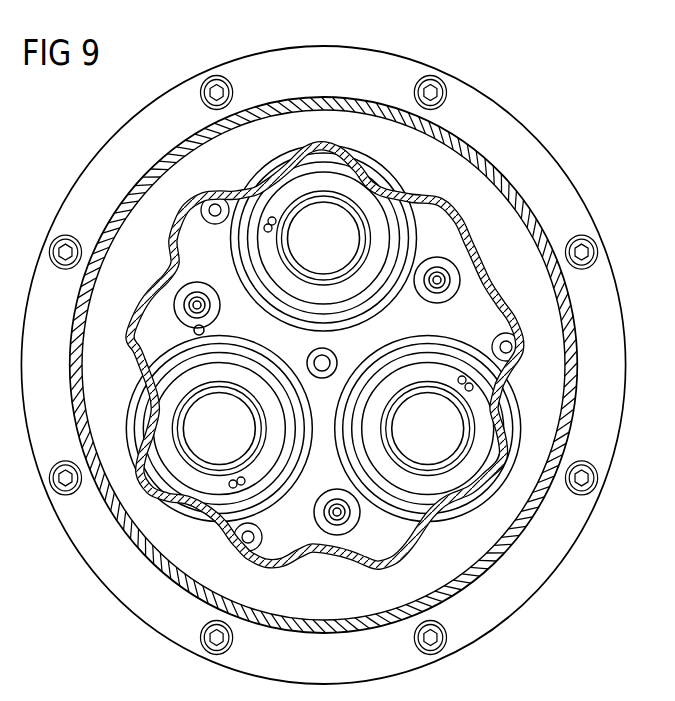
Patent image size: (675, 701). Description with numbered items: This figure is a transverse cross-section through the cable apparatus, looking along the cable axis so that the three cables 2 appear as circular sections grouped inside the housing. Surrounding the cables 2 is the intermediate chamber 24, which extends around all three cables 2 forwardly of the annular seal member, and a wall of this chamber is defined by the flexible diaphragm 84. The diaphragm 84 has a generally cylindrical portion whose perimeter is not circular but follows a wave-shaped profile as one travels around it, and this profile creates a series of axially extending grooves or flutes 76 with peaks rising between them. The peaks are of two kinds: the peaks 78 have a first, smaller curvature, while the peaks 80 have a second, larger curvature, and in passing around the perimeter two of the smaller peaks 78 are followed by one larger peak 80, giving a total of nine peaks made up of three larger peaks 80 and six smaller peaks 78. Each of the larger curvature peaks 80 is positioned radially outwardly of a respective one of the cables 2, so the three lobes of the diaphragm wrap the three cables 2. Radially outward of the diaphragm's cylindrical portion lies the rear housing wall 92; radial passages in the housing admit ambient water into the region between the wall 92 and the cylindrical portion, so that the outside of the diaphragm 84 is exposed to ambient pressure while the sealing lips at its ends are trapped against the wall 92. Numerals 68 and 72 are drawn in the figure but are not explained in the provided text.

The cable 2 is at (270, 245).
The intermediate chamber 24 is at (480, 303).
The planet pin 68 is at (430, 470).
The planet gear bearing 72 is at (470, 473).
The grooves 76 is at (503, 410).
The first curvature peaks 78 is at (196, 202).
The second curvature peaks 80 is at (324, 145).
The flexible diaphragm 84 is at (487, 238).
The rear housing wall 92 is at (498, 174).